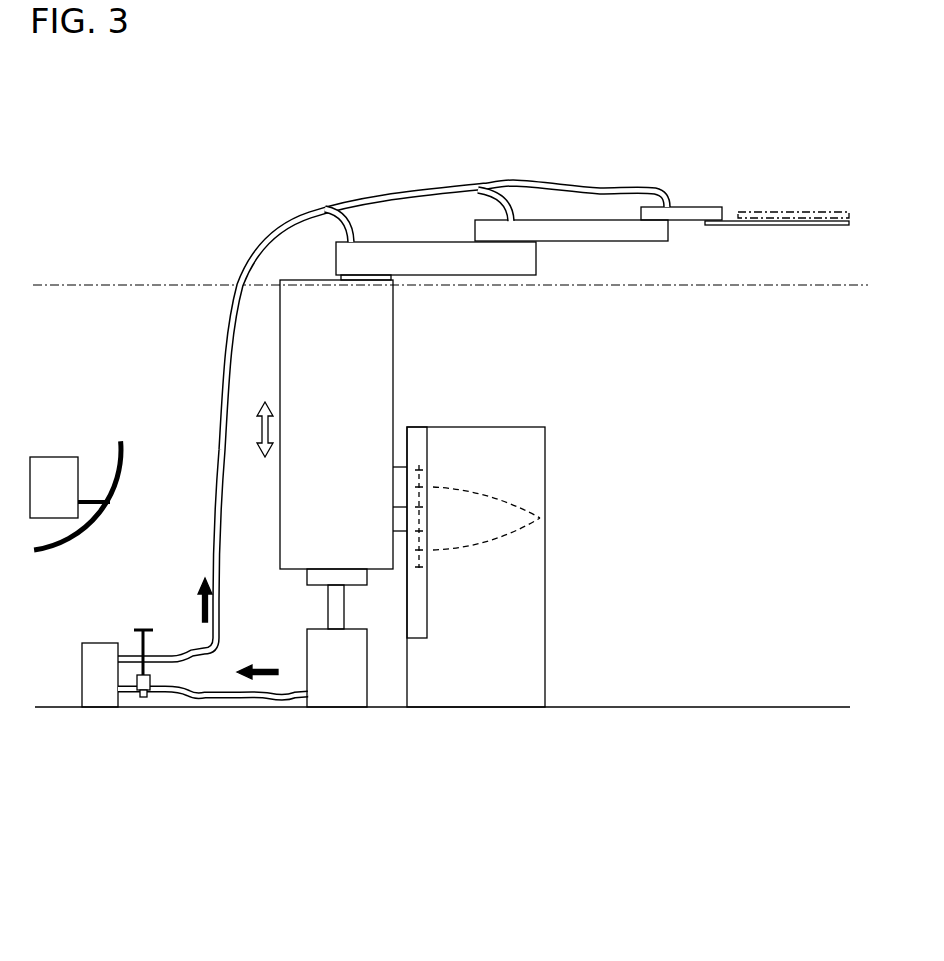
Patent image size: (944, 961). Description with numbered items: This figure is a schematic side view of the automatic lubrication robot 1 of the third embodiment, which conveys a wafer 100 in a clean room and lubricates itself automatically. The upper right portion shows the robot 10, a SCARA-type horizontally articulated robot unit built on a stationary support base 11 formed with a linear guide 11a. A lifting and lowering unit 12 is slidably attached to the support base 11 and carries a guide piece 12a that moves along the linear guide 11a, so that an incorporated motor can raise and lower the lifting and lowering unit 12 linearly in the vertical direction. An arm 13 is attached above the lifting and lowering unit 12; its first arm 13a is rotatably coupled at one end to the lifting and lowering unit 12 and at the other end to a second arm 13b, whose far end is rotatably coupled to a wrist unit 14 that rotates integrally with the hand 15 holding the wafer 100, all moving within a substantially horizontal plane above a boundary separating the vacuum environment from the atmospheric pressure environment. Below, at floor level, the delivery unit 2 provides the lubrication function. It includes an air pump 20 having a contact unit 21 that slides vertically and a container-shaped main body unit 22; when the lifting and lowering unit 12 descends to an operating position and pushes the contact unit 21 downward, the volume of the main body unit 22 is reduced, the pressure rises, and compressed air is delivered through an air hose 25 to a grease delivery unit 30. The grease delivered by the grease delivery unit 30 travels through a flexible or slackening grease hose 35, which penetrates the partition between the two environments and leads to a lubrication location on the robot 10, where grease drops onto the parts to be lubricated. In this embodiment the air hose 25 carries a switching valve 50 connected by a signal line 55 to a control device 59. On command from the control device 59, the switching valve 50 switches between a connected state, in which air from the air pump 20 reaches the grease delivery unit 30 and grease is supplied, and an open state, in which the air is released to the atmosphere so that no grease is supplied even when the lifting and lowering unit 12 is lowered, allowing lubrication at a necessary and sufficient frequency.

The automatic lubrication robot 1 is at (90, 158).
The delivery unit 2 is at (244, 748).
The robot 10 is at (509, 457).
The support base 11 is at (527, 642).
The linear guide 11a is at (417, 432).
The lifting and lowering unit 12 is at (290, 328).
The guide piece 12a is at (540, 518).
The arm 13 is at (603, 318).
The first arm 13a is at (500, 276).
The second arm 13b is at (610, 243).
The wrist unit 14 is at (692, 222).
The hand 15 is at (758, 226).
The wafer 100 is at (790, 212).
The air pump 20 is at (366, 721).
The contact unit 21 is at (360, 577).
The main body unit 22 is at (355, 695).
The air hose 25 is at (212, 693).
The grease delivery unit 30 is at (97, 650).
The grease hose 35 is at (287, 225).
The switching valve 50 is at (160, 697).
The signal line 55 is at (90, 497).
The control device 59 is at (52, 463).